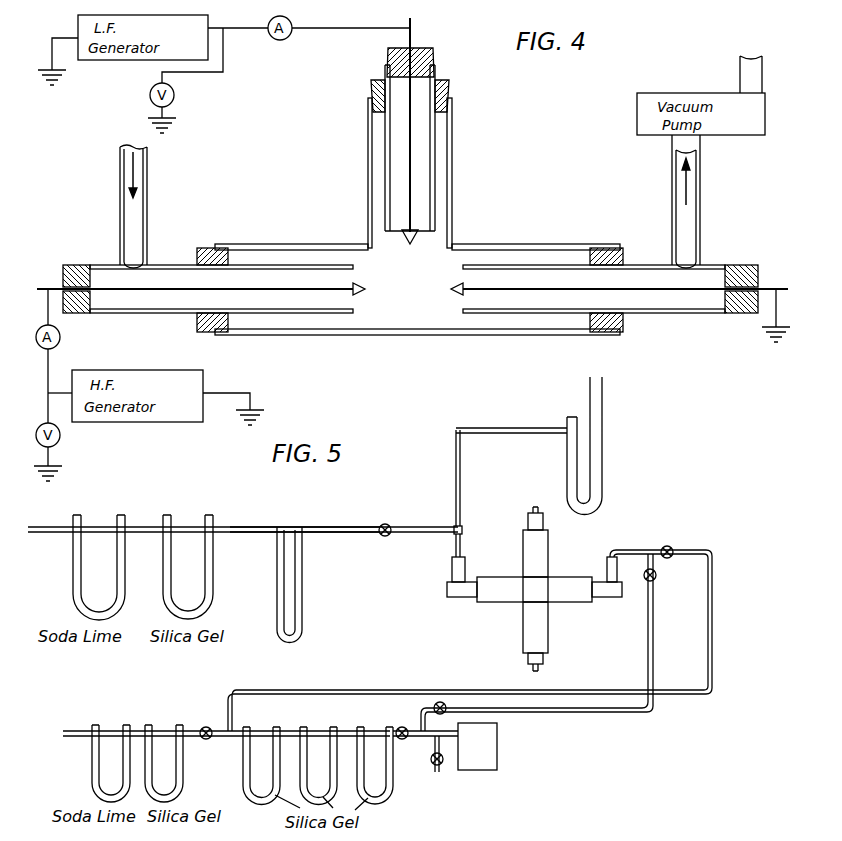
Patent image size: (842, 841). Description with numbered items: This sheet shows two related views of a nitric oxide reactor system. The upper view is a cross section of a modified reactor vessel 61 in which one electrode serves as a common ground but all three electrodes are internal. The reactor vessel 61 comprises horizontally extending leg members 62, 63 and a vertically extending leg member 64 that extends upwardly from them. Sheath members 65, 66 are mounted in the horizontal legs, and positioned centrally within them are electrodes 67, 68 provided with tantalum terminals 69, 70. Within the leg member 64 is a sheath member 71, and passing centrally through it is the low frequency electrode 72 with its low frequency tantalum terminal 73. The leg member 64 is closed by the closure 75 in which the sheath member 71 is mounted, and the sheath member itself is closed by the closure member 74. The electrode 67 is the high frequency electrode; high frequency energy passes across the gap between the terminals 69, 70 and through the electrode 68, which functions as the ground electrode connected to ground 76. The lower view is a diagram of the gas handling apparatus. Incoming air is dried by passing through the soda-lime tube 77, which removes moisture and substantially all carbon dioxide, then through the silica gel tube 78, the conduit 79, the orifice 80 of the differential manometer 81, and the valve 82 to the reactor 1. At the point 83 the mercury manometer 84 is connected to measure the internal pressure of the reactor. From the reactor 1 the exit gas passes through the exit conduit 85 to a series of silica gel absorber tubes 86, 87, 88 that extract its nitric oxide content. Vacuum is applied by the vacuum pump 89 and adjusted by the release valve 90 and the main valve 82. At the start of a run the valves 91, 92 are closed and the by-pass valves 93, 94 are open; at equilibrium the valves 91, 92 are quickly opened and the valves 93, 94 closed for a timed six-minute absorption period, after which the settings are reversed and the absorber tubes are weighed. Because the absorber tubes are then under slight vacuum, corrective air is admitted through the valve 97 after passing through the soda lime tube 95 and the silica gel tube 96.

In FIG. 5, the reactor 1 is at (507, 576).
In FIG. 4, the reactor vessel 61 is at (372, 341).
In FIG. 4, the horizontally extending leg member 62 is at (292, 336).
In FIG. 4, the horizontally extending leg member 63 is at (525, 247).
In FIG. 4, the vertically extending leg member 64 is at (453, 165).
In FIG. 4, the sheath member 65 is at (283, 240).
In FIG. 4, the sheath member 66 is at (556, 336).
In FIG. 4, the electrode 67 is at (163, 291).
In FIG. 4, the electrode 68 is at (670, 291).
In FIG. 4, the tantalum terminal 69 is at (364, 289).
In FIG. 4, the tantalum terminal 70 is at (455, 288).
In FIG. 4, the sheath member 71 is at (388, 154).
In FIG. 4, the low frequency electrode 72 is at (414, 136).
In FIG. 4, the low frequency tantalum terminal 73 is at (409, 246).
In FIG. 4, the closure member 74 is at (395, 45).
In FIG. 4, the closure 75 is at (450, 92).
In FIG. 4, the ground 76 is at (765, 340).
In FIG. 5, the soda-lime tube 77 is at (73, 558).
In FIG. 5, the silica gel tube 78 is at (213, 571).
In FIG. 5, the conduit 79 is at (256, 518).
In FIG. 5, the orifice 80 is at (292, 526).
In FIG. 5, the differential manometer 81 is at (303, 579).
In FIG. 5, the valve 82 is at (387, 523).
In FIG. 5, the point 83 is at (463, 526).
In FIG. 5, the mercury manometer 84 is at (601, 440).
In FIG. 5, the exit conduit 85 is at (620, 550).
In FIG. 5, the silica gel absorber tube 86 is at (245, 765).
In FIG. 5, the silica gel absorber tube 87 is at (325, 743).
In FIG. 5, the silica gel absorber tube 88 is at (382, 745).
In FIG. 5, the vacuum pump 89 is at (495, 745).
In FIG. 5, the release valve 90 is at (434, 766).
In FIG. 5, the valve 91 is at (671, 548).
In FIG. 5, the valve 92 is at (402, 727).
In FIG. 5, the valve 93 is at (657, 576).
In FIG. 5, the valve 94 is at (442, 702).
In FIG. 5, the soda lime tube 95 is at (92, 758).
In FIG. 5, the silica gel tube 96 is at (152, 752).
In FIG. 5, the valve 97 is at (206, 726).